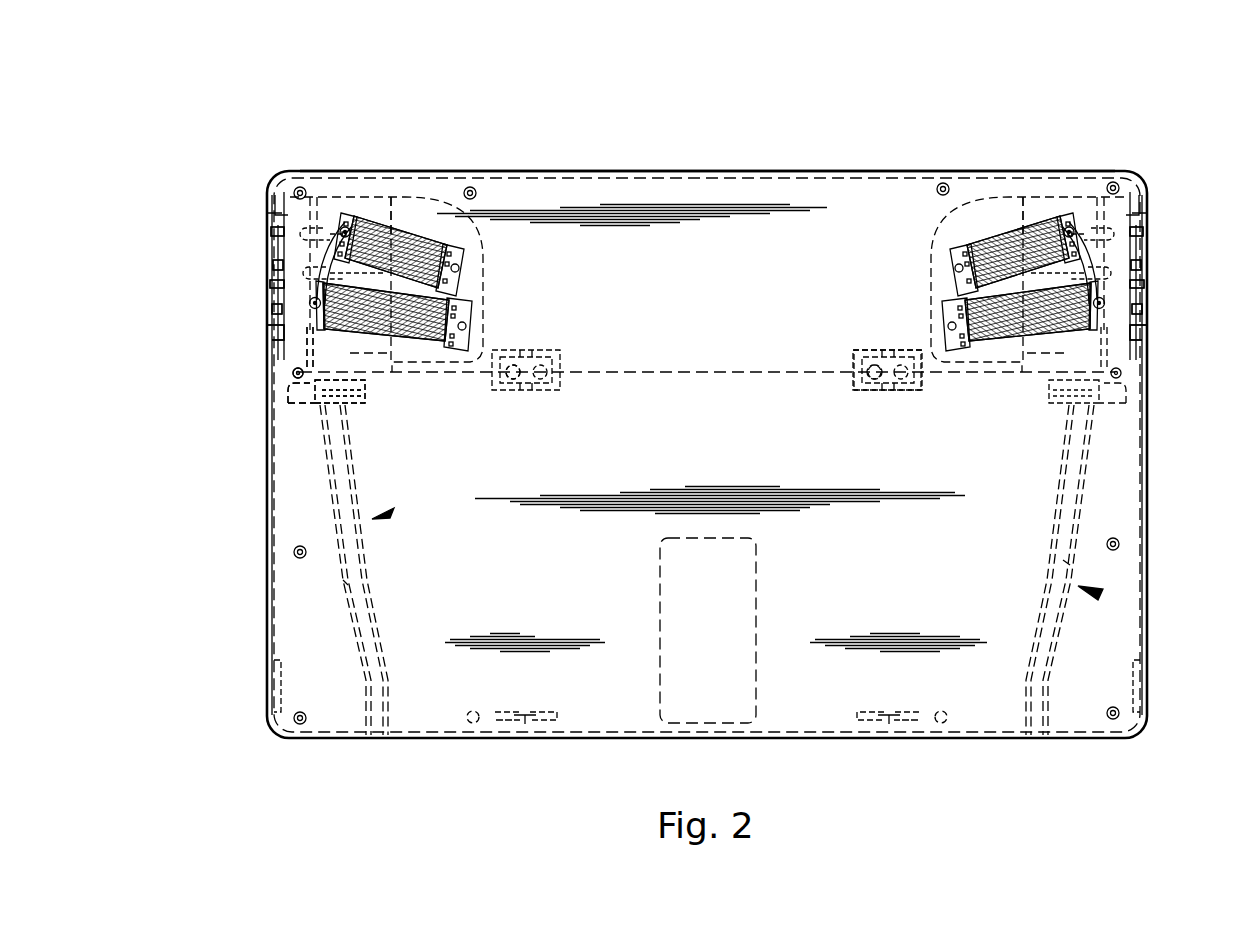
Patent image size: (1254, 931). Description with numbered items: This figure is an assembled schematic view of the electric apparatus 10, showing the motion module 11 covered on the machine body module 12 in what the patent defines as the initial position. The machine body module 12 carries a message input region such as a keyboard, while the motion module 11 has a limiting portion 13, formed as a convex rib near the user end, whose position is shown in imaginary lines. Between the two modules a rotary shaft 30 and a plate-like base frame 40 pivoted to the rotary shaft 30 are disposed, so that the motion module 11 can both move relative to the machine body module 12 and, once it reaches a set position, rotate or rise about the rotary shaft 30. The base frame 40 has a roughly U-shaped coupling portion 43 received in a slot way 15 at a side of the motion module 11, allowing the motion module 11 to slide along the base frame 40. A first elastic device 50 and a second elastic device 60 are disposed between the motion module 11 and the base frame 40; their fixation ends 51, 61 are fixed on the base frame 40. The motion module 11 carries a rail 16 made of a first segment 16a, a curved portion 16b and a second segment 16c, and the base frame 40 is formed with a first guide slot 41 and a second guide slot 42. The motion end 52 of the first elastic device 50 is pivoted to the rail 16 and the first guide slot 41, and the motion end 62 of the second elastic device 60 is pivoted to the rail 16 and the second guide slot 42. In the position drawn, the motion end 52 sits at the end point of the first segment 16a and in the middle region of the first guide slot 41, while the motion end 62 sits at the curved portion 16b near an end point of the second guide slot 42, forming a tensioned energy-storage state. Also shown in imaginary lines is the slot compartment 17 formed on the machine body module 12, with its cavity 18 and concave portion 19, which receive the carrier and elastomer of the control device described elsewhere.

The electric apparatus 10 is at (685, 148).
The motion module 11 is at (603, 168).
The machine body module 12 is at (766, 168).
The limiting portion 13 is at (525, 740).
The slot way 15 is at (266, 206).
The rail 16 is at (394, 512).
The first segment 16a is at (270, 236).
The curved portion 16b is at (272, 266).
The second segment 16c is at (345, 592).
The slot compartment 17 is at (887, 392).
The cavity 18 is at (545, 392).
The concave portion 19 is at (507, 392).
The rotary shaft 30 is at (307, 420).
The base frame 40 is at (497, 302).
The first guide slot 41 is at (321, 187).
The second guide slot 42 is at (282, 282).
The coupling portion 43 is at (270, 330).
The first elastic device 50 is at (398, 190).
The fixation end 51 is at (470, 255).
The motion end 52 is at (366, 192).
The second elastic device 60 is at (393, 382).
The fixation end 61 is at (478, 325).
The motion end 62 is at (272, 310).